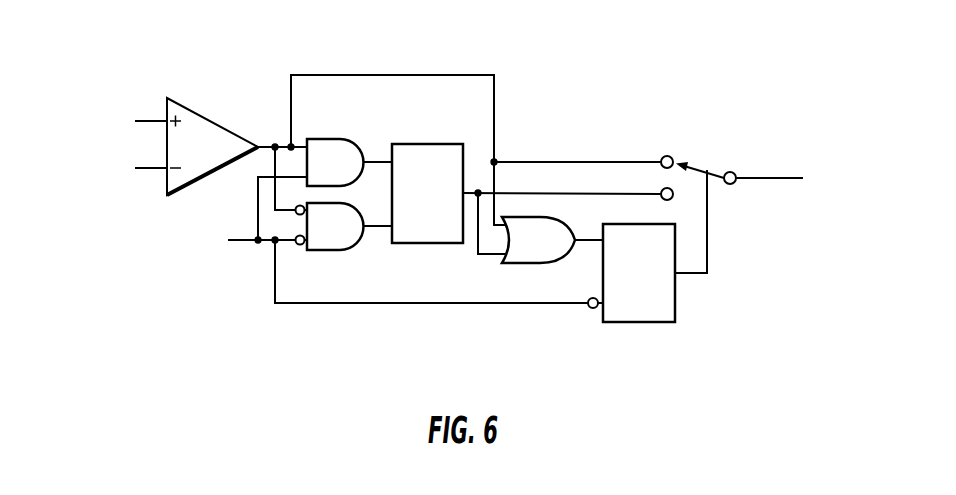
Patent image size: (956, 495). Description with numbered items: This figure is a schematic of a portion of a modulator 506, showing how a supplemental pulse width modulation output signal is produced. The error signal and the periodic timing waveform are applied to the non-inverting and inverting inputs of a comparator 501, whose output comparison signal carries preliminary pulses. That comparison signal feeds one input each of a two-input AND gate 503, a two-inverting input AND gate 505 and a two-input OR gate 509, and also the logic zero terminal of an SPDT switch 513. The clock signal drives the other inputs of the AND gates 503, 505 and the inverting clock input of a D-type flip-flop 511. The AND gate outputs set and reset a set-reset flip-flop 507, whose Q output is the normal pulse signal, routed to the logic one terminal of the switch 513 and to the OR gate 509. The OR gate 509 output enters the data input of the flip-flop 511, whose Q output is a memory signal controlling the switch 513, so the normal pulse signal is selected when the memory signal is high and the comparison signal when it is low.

The comparator 501 is at (207, 158).
The two-input AND gate 503 is at (345, 174).
The two-inverting input AND gate 505 is at (345, 236).
The modulator 506 is at (130, 372).
The set-reset flip-flop 507 is at (408, 144).
The two-input OR gate 509 is at (557, 250).
The D-type flip-flop 511 is at (638, 322).
The SPDT switch 513 is at (702, 163).